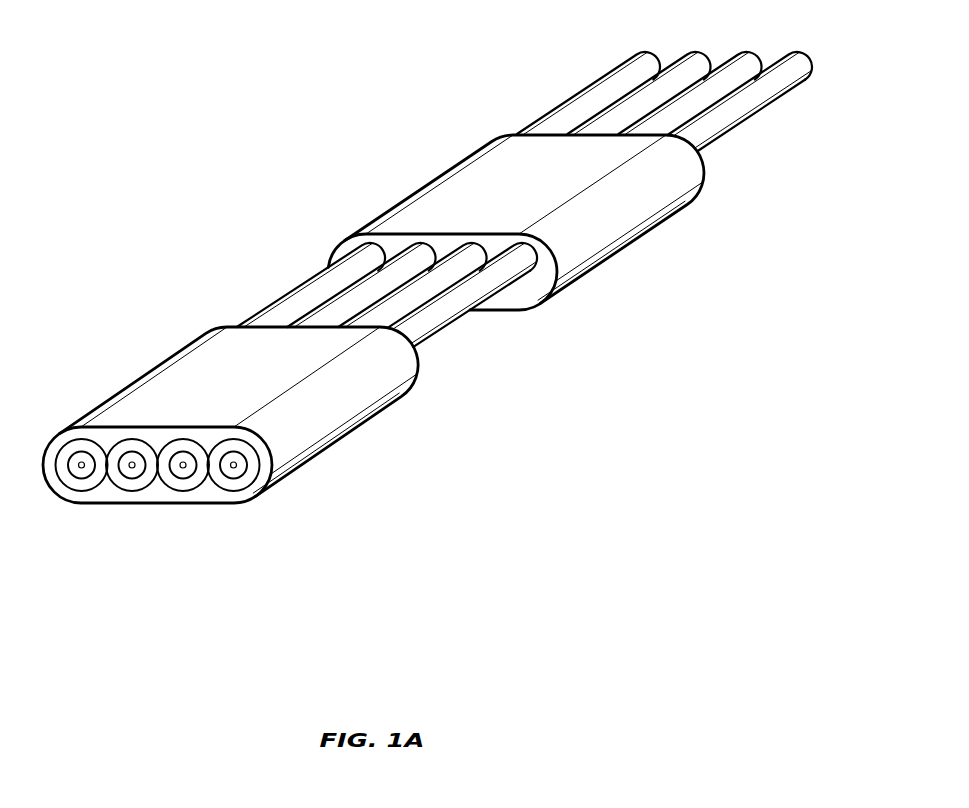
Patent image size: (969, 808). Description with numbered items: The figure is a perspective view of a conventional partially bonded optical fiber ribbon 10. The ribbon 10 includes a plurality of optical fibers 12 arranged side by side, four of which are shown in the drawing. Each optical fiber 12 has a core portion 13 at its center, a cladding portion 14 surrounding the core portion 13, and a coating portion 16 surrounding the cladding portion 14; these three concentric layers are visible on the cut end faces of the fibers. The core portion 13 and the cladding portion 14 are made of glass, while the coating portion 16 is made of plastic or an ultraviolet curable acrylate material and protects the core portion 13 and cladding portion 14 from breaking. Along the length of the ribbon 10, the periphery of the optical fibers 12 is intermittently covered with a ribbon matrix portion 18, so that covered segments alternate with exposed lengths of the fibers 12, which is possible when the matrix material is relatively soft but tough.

The partially bonded optical fiber ribbon 10 is at (342, 136).
The optical fiber 12 is at (642, 51).
The core portion 13 is at (80, 469).
The cladding portion 14 is at (71, 472).
The coating portion 16 is at (85, 492).
The ribbon matrix portion 18 is at (343, 438).